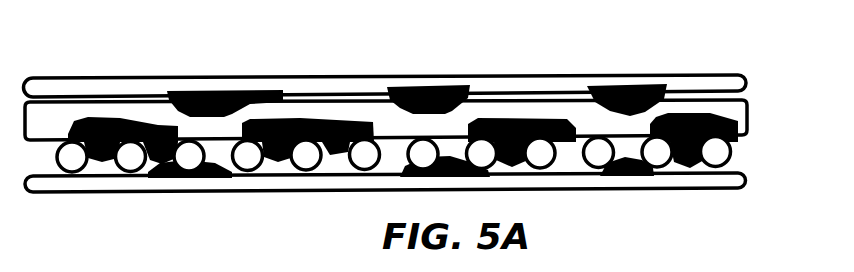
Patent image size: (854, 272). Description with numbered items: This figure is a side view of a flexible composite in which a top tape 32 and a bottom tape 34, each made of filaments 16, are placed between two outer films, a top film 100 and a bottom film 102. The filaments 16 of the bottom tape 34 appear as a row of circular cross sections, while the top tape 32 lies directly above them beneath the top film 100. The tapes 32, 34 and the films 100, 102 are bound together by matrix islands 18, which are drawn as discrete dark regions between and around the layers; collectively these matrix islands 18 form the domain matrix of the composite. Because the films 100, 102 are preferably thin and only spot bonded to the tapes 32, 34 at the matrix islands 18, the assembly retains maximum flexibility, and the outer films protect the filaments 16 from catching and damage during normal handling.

The top film 100 is at (691, 76).
The bottom film 102 is at (742, 178).
The top tape 32 is at (439, 95).
The bottom tape 34 is at (455, 144).
The filaments 16 is at (737, 108).
The matrix islands 18 is at (278, 120).